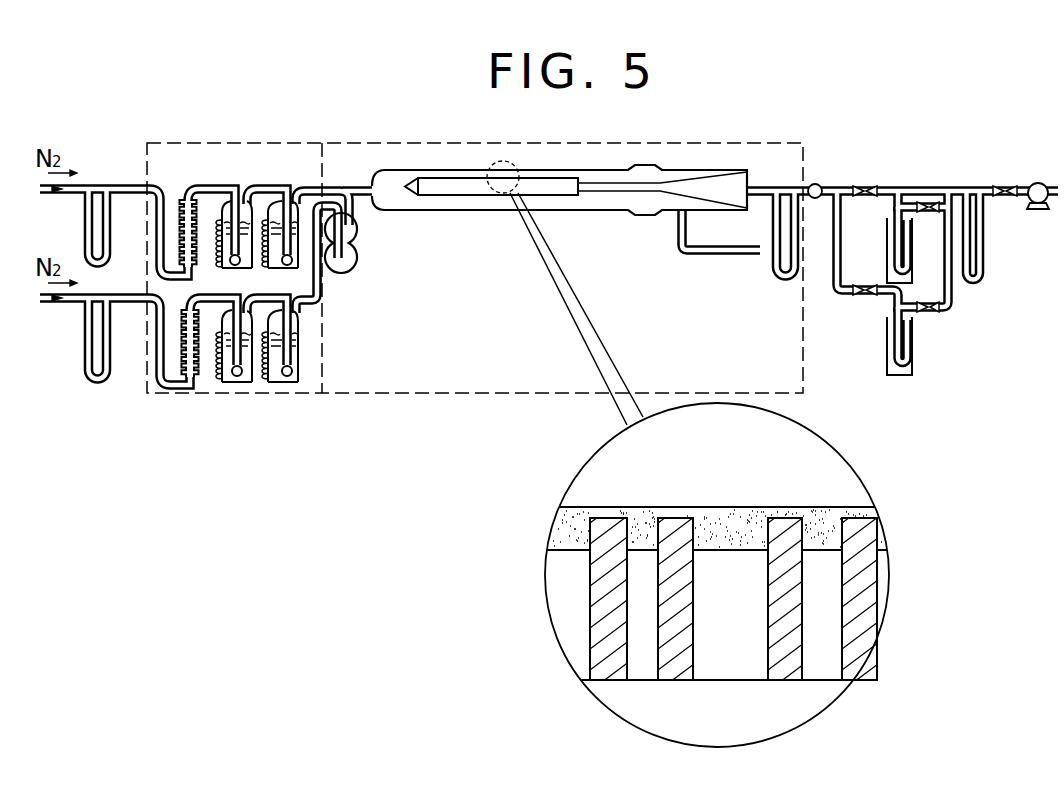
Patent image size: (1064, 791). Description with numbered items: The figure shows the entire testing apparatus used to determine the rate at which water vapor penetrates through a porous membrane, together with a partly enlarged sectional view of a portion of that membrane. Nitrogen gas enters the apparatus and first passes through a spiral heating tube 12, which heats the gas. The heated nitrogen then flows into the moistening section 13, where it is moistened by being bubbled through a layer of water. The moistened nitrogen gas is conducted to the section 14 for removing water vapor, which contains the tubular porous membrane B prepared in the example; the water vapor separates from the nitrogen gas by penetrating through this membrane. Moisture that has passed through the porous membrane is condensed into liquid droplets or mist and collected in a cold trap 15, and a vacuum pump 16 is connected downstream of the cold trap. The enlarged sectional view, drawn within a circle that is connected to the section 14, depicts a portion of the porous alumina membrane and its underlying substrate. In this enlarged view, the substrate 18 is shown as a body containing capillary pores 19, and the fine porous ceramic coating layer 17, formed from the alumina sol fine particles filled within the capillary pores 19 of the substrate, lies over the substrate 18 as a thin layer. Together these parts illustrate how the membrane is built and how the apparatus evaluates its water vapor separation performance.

The spiral heating tube 12 is at (179, 202).
The moistening section 13 is at (226, 202).
The section for removing water vapor 14 is at (503, 160).
The cold trap 15 is at (902, 203).
The vacuum pump 16 is at (1038, 186).
The fine porous ceramic coating layer 17 is at (574, 505).
The substrate 18 is at (873, 636).
The capillary pore 19 is at (558, 620).
The tubular porous membrane B is at (455, 200).